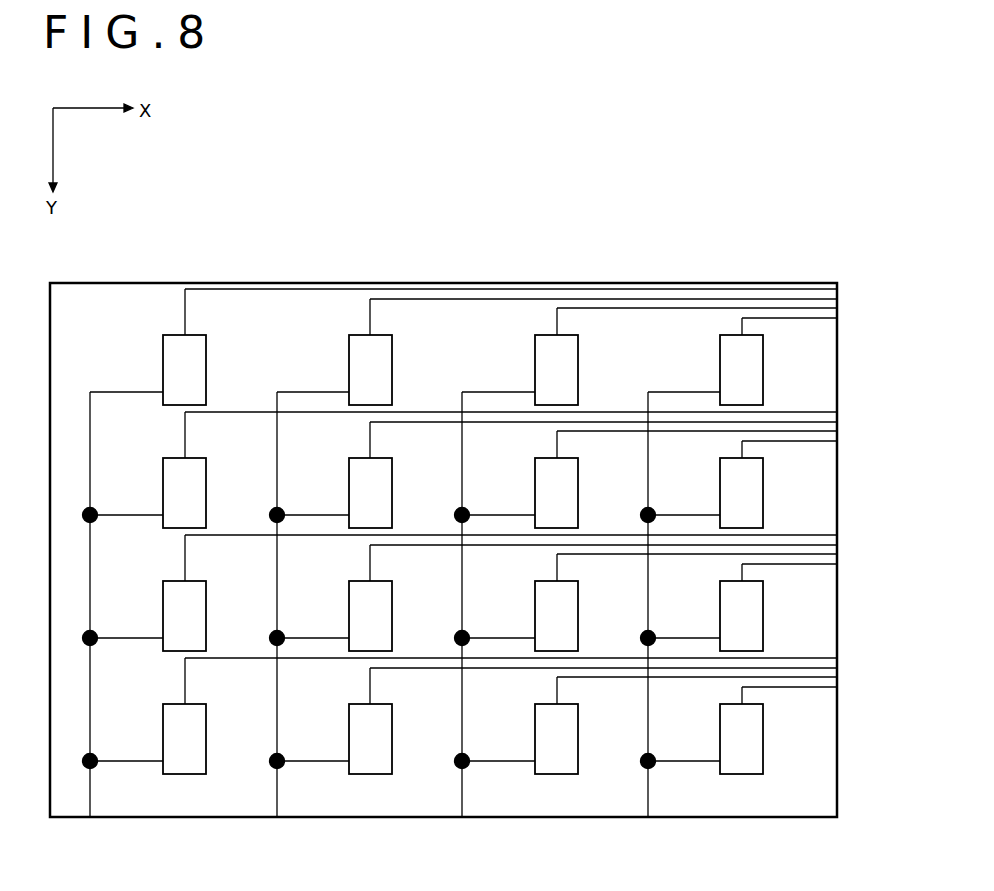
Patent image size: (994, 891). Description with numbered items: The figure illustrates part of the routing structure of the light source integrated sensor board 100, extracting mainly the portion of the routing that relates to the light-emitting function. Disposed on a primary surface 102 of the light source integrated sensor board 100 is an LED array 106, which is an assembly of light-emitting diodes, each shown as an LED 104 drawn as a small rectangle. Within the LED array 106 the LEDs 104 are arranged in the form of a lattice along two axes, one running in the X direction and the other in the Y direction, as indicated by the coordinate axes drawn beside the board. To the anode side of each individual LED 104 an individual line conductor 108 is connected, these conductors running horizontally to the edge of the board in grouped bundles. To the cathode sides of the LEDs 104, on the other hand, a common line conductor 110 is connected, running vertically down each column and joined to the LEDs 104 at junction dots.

The light source integrated sensor board 100 is at (258, 185).
The primary surface 102 is at (72, 302).
The LED 104 is at (192, 368).
The LED array 106 is at (145, 308).
The individual line conductor 108 is at (848, 277).
The common line conductor 110 is at (90, 798).